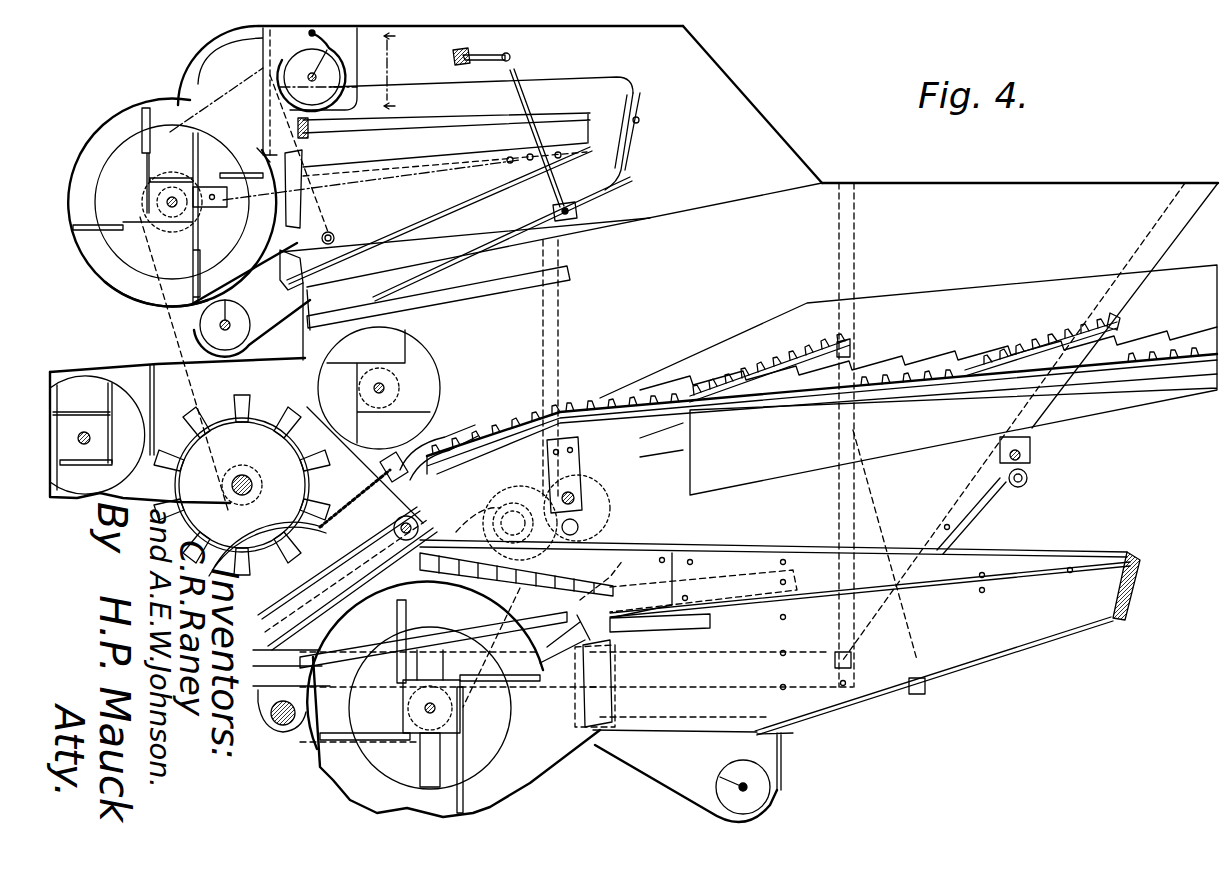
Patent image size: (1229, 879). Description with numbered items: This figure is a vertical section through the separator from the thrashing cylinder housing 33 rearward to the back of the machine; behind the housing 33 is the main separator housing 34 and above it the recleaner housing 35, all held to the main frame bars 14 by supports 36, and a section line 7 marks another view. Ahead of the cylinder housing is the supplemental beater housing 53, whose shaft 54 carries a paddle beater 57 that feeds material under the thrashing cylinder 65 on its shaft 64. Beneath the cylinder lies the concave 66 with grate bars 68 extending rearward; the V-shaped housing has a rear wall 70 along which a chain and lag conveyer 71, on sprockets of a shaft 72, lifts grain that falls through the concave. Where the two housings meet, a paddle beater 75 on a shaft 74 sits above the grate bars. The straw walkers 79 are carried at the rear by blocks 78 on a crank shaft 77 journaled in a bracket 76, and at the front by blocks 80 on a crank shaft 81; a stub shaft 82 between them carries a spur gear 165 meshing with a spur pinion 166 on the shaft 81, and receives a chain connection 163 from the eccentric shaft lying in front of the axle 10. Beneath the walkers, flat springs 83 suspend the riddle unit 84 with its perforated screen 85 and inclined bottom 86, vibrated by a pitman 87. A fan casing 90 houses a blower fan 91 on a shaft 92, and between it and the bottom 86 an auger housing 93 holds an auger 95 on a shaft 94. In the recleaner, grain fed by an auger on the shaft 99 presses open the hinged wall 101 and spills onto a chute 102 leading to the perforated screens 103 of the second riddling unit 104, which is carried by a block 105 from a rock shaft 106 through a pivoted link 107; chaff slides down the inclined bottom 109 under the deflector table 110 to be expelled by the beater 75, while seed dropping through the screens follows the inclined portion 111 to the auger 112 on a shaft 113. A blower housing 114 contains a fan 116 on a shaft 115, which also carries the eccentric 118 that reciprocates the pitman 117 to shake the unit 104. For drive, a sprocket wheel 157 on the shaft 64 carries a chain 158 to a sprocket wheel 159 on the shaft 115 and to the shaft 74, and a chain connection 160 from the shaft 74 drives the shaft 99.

The section line 7- 7 is at (392, 74).
The axle 10 is at (283, 727).
The main frame bars 14 is at (828, 690).
The thrashing cylinder housing 33 is at (150, 399).
The main separator housing 34 is at (952, 205).
The recleaner housing 35 is at (728, 78).
The supports 36 is at (853, 226).
The supplemental beater housing 53 is at (122, 366).
The shaft 54 is at (95, 438).
The beater 57 is at (88, 464).
The transverse shaft 64 is at (242, 497).
The thrashing cylinder 65 is at (246, 395).
The cylinder concave 66 is at (305, 628).
The grate bars 68 is at (367, 484).
The rear wall 70 is at (433, 563).
The chain and lag conveyer 71 is at (396, 520).
The transverse shaft 72 is at (408, 478).
The transverse shaft 74 is at (390, 380).
The paddle beater 75 is at (423, 417).
The bracket 76 is at (1002, 486).
The crank shaft 77 is at (1030, 476).
The blocks 78 is at (1035, 446).
The straw walkers and fish backs 79 is at (1163, 360).
The blocks 80 is at (576, 441).
The crank shaft 81 is at (580, 526).
The stub shaft 82 is at (512, 503).
The flat springs 83 is at (597, 594).
The riddle unit 84 is at (1135, 596).
The perforated screen 85 is at (1027, 570).
The inclined bottom 86 is at (1003, 655).
The pitman 87 is at (457, 627).
The fan casing 90 is at (326, 780).
The blower fan 91 is at (463, 788).
The shaft 92 is at (440, 707).
The auger housing 93 is at (782, 756).
The shaft 94 is at (748, 787).
The auger 95 is at (767, 801).
The transverse shaft 99 is at (263, 52).
The hinged wall 101 is at (350, 72).
The chute 102 is at (320, 122).
The perforated screens 103 is at (590, 118).
The second vibratory riddling unit 104 is at (636, 163).
The block 105 is at (578, 213).
The rock shaft 106 is at (470, 52).
The pivoted link 107 is at (515, 66).
The inclined bottom 109 is at (513, 239).
The inclined table 110 is at (478, 292).
The inclined portion 111 is at (410, 223).
The auger 112 is at (240, 313).
The shaft 113 is at (165, 348).
The blower housing 114 is at (130, 112).
The shaft 115 is at (150, 197).
The blower fan 116 is at (100, 272).
The pitman 117 is at (284, 238).
The eccentric 118 is at (152, 236).
The sprocket wheel 157 is at (246, 450).
The chain 158 is at (194, 397).
The sprocket wheel 159 is at (213, 210).
The chain connection 160 is at (362, 217).
The chain connection 163 is at (490, 505).
The spur gear 165 is at (486, 527).
The spur pinion 166 is at (607, 496).